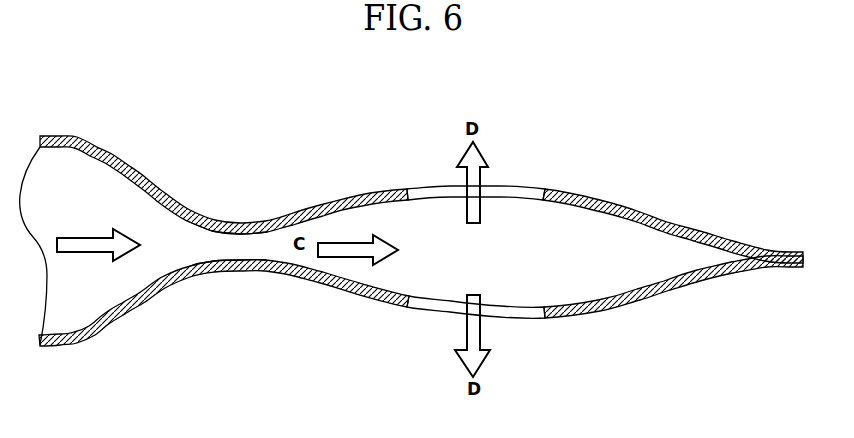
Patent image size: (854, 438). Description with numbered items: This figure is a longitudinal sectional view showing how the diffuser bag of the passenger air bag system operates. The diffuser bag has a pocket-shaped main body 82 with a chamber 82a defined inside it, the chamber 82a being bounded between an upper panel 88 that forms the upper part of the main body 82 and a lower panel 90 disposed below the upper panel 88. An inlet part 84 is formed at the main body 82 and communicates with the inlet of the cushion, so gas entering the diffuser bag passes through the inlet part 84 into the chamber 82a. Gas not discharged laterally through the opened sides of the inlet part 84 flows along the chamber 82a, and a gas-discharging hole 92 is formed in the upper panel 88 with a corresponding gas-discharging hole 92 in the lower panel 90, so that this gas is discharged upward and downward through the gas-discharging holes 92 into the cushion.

The main body 82 is at (338, 110).
The chamber 82a is at (607, 272).
The inlet part 84 is at (82, 318).
The upper panel 88 is at (332, 203).
The lower panel 90 is at (275, 264).
The gas-discharging hole 92 is at (522, 195).